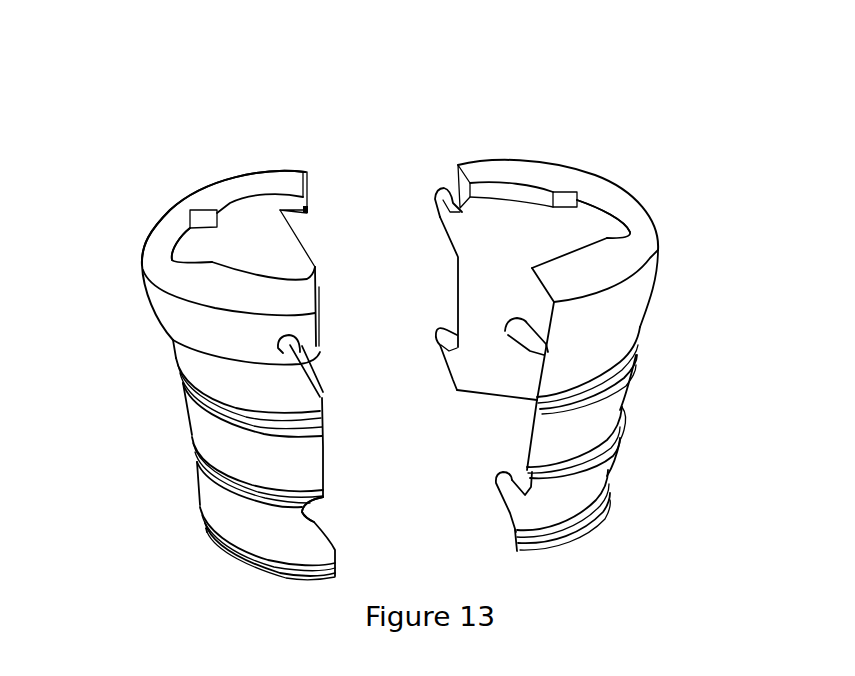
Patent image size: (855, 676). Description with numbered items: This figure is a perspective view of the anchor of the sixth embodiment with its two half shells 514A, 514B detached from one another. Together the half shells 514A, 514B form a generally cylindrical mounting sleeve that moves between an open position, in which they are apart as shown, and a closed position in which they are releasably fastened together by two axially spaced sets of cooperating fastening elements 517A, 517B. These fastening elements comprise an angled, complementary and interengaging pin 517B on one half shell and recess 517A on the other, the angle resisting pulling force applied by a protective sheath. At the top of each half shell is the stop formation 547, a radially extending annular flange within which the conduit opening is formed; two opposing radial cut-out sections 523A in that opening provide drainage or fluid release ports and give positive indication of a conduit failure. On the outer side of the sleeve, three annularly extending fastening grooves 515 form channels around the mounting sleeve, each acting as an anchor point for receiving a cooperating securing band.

The half shell 514A is at (538, 168).
The half shell 514B is at (212, 287).
The stop formation 547 is at (237, 188).
The radial cut-out sections 523A is at (178, 232).
The recess 517A is at (441, 195).
The pin 517B is at (295, 214).
The fastening grooves 515 is at (207, 372).